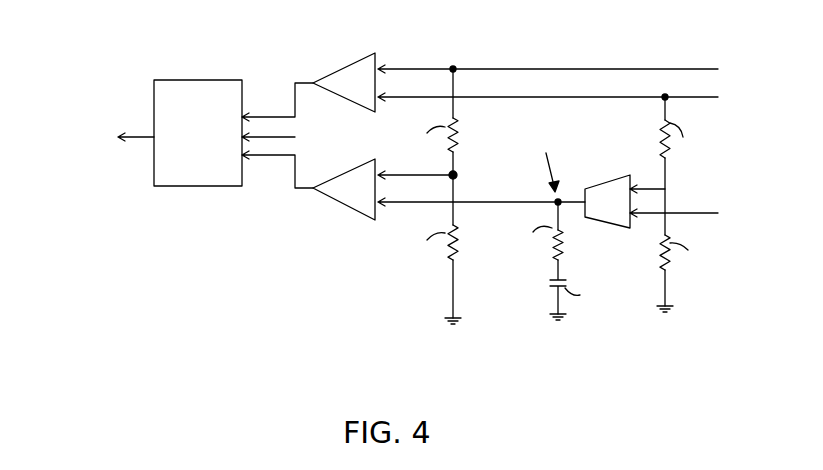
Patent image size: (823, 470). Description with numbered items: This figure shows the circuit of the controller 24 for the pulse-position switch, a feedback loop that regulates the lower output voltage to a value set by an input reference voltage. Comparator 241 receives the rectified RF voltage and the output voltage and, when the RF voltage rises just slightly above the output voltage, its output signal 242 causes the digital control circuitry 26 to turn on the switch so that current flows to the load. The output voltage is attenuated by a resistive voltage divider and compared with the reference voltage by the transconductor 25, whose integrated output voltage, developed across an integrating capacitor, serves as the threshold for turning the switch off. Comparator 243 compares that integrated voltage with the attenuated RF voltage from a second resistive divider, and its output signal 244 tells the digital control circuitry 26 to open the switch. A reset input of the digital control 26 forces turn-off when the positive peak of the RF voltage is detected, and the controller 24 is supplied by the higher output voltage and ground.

The controller 24 is at (247, 268).
The transconductor 25 is at (598, 184).
The digital control circuitry 26 is at (188, 163).
The comparator 241 is at (348, 65).
The first comparator output signal 242 is at (272, 114).
The comparator 243 is at (345, 206).
The second comparator output signal 244 is at (275, 158).